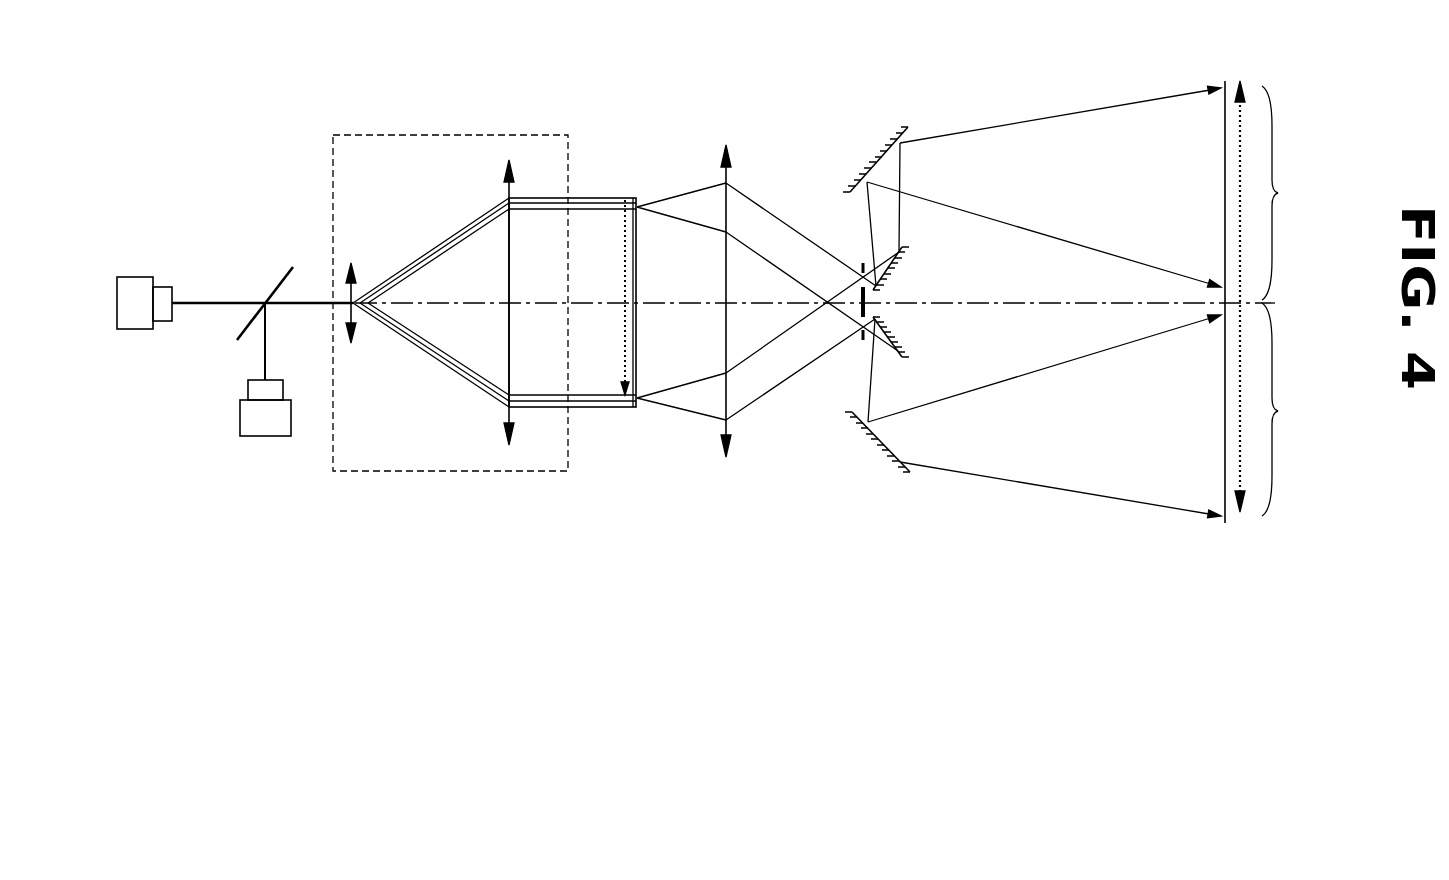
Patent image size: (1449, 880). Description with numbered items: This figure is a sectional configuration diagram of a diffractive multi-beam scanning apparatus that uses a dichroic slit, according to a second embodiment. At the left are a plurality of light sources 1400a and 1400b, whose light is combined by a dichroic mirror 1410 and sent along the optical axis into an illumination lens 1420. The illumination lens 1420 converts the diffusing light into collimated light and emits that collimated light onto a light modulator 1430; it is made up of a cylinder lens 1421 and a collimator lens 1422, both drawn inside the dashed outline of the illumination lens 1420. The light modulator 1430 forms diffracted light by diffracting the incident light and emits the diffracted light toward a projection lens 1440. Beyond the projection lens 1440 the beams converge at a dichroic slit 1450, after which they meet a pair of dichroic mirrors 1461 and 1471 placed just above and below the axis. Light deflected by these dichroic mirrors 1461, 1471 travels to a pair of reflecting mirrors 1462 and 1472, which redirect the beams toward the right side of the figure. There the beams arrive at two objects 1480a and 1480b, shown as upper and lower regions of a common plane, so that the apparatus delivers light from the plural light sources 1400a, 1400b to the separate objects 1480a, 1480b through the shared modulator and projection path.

The light source 1400a is at (136, 277).
The light source 1400b is at (240, 417).
The dichroic mirror 1410 is at (287, 267).
The illumination lens 1420 is at (455, 135).
The cylinder lens 1421 is at (357, 273).
The collimator lens 1422 is at (512, 167).
The light modulator 1430 is at (637, 198).
The projection lens 1440 is at (737, 157).
The dichroic slit 1450 is at (862, 264).
The dichroic mirror 1461 is at (905, 252).
The reflecting mirror 1462 is at (907, 127).
The dichroic mirror 1471 is at (905, 353).
The reflecting mirror 1472 is at (905, 475).
The object 1480a is at (1299, 193).
The object 1480b is at (1299, 409).